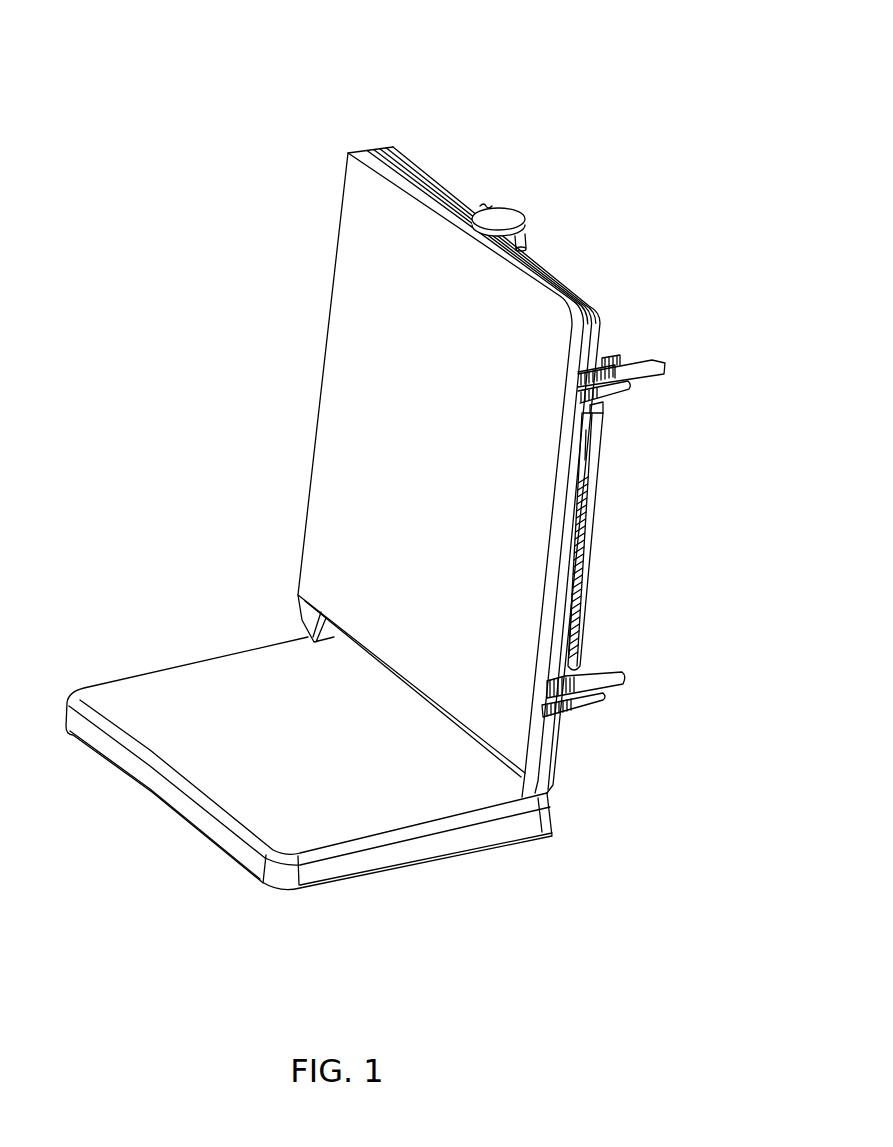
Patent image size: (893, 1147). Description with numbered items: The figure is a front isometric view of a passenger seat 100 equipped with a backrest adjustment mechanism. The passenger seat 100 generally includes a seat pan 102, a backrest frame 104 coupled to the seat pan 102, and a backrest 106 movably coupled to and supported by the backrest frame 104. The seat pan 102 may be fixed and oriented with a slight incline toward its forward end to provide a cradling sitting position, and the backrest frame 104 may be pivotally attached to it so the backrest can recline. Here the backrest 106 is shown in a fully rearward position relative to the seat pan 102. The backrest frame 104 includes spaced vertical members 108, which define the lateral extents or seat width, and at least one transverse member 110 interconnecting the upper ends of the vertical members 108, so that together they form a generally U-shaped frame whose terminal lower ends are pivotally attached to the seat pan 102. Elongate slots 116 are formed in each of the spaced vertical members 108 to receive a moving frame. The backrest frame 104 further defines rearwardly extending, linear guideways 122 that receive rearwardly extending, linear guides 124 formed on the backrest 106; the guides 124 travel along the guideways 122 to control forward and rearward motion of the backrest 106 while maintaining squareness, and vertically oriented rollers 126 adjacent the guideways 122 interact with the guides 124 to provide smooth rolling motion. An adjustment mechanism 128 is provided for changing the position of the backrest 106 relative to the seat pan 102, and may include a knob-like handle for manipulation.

The passenger seat 100 is at (467, 108).
The seat pan 102 is at (180, 700).
The backrest frame 104 is at (595, 529).
The backrest 106 is at (338, 418).
The spaced vertical members 108 is at (563, 650).
The transverse member 110 is at (567, 292).
The elongate slots 116 is at (598, 472).
The linear guideways 122 is at (618, 362).
The linear guides 124 is at (655, 377).
The rollers 126 is at (570, 713).
The adjustment mechanism 128 is at (495, 202).